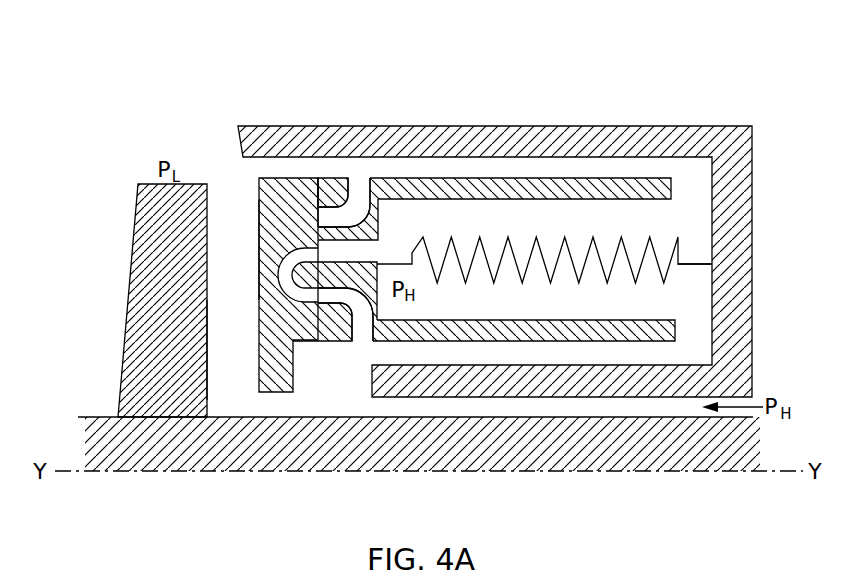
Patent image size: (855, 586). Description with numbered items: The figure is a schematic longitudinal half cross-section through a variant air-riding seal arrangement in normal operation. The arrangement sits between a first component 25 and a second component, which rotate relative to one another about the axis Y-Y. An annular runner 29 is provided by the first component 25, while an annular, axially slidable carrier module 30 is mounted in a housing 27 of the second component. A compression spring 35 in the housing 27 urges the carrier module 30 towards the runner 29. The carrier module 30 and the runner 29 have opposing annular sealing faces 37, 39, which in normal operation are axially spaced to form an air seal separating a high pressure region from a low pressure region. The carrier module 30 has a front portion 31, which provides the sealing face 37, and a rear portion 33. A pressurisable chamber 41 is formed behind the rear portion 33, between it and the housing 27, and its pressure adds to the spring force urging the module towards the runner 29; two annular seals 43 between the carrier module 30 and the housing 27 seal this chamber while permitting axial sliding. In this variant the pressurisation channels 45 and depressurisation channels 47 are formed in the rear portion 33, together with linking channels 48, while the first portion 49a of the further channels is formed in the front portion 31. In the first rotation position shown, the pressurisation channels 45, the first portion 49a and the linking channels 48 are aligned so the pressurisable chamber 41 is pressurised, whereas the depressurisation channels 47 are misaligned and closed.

The first component 25 is at (332, 462).
The housing 27 is at (704, 127).
The annular runner 29 is at (131, 268).
The carrier module 30 is at (245, 63).
The front portion 31 is at (292, 178).
The rear portion 33 is at (372, 178).
The compression spring 35 is at (700, 265).
The sealing face 37 is at (259, 240).
The sealing face 39 is at (207, 347).
The pressurisable chamber 41 is at (600, 232).
The annular seals 43 is at (470, 178).
The pressurisation channels 45 is at (360, 318).
The depressurisation channels 47 is at (358, 200).
The linking channels 48 is at (345, 253).
The first portion of the further channels 49a is at (281, 270).